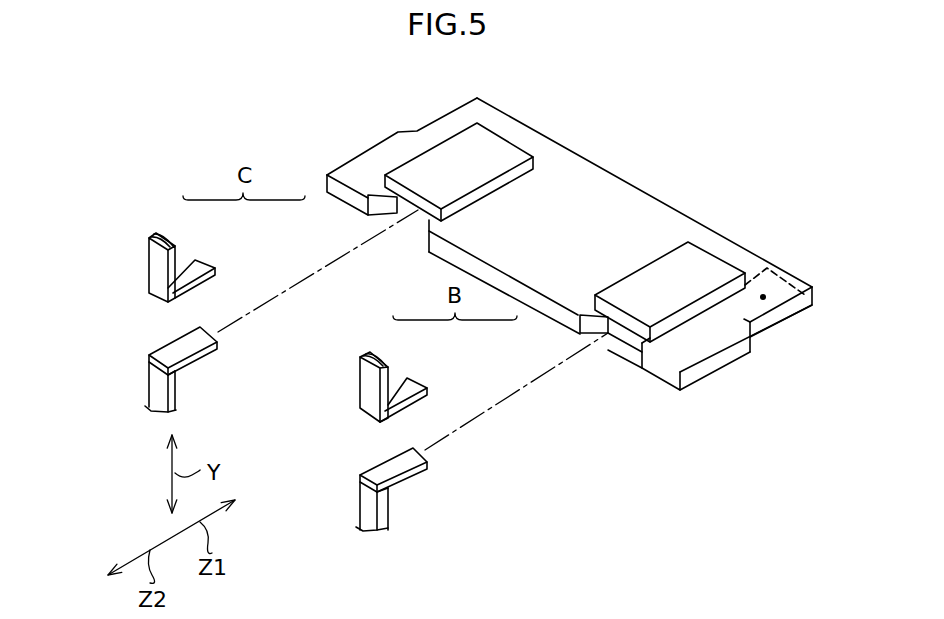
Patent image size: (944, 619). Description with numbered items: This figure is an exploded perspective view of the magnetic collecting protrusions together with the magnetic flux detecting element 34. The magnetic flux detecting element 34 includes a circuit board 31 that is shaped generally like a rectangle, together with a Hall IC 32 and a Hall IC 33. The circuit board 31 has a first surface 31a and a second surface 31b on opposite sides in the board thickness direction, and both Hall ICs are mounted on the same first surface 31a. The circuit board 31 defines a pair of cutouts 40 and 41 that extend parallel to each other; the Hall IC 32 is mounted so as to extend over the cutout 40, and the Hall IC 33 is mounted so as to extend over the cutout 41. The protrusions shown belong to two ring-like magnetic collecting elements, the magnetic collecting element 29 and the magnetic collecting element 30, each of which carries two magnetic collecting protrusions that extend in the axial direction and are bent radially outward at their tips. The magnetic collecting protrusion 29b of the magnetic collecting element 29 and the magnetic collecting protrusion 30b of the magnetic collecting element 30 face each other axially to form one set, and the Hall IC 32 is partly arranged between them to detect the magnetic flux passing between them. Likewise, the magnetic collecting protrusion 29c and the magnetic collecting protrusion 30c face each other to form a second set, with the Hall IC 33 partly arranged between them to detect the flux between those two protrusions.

The magnetic collecting element 29 is at (358, 390).
The magnetic collecting protrusion 29b is at (407, 388).
The magnetic collecting protrusion 29c is at (196, 267).
The magnetic collecting element 30 is at (358, 499).
The magnetic collecting protrusion 30b is at (400, 460).
The magnetic collecting protrusion 30c is at (190, 340).
The circuit board 31 is at (560, 192).
The first surface 31a is at (632, 215).
The second surface 31b is at (763, 300).
The Hall IC 32 is at (700, 272).
The Hall IC 33 is at (487, 148).
The magnetic flux detecting element 34 is at (782, 242).
The cutout 40 is at (632, 333).
The cutout 41 is at (418, 215).